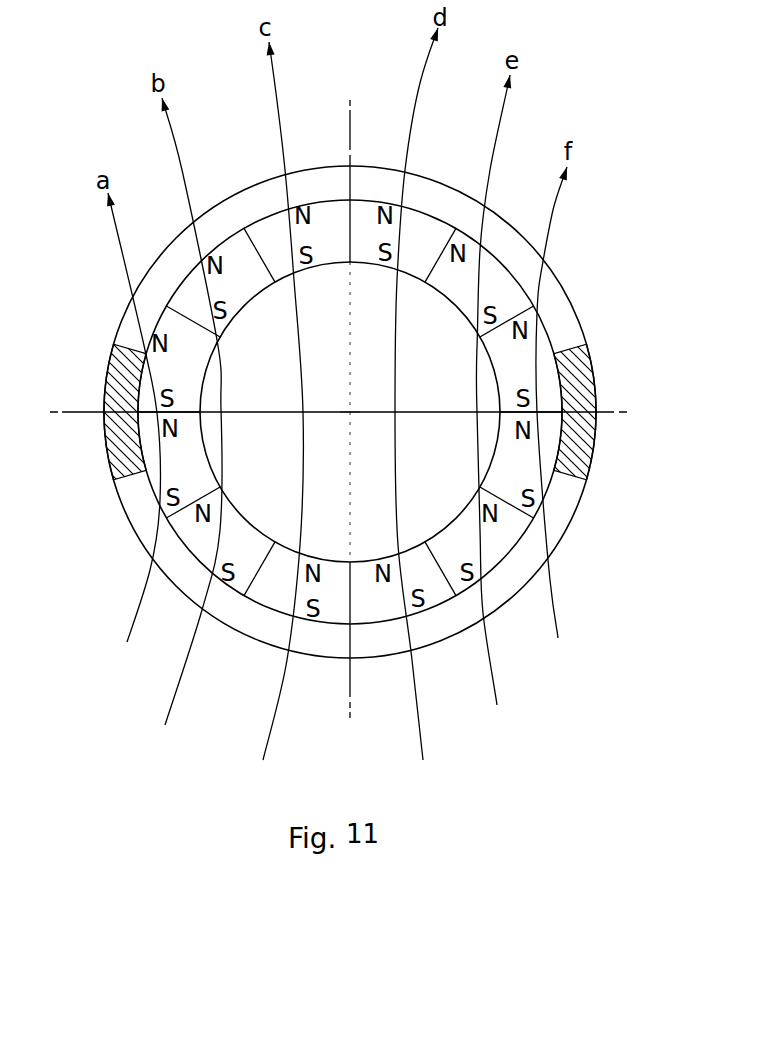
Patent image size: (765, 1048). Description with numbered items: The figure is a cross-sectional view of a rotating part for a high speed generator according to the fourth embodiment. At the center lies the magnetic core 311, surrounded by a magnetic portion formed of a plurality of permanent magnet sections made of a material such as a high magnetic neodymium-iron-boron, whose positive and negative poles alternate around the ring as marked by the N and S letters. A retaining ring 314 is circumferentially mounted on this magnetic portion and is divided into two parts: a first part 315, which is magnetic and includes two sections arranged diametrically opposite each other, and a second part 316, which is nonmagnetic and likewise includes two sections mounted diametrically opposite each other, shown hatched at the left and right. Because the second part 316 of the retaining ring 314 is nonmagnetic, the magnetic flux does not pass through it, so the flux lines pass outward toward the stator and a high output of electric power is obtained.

The magnetic core 311 is at (423, 503).
The retaining ring 314 is at (440, 182).
The first part 315 is at (555, 303).
The second part 316 is at (117, 375).